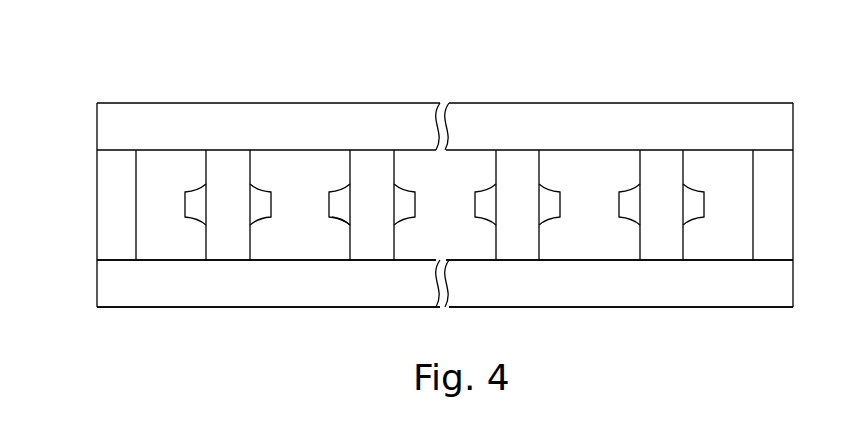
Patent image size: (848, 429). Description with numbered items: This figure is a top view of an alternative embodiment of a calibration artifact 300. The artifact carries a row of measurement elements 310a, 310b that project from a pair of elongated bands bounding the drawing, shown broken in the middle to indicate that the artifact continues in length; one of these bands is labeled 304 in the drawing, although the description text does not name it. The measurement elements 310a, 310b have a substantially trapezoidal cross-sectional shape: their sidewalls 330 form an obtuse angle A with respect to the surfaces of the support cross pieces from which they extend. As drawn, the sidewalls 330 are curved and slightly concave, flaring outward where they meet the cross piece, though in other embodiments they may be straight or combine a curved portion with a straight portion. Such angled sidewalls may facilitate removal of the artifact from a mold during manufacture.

The calibration artifact 300 is at (170, 46).
The lower substrate layer 304 is at (153, 290).
The sidewalls 330 is at (344, 186).
The obtuse angle A is at (344, 224).
The measurement element 310a is at (487, 198).
The measurement element 310b is at (545, 200).